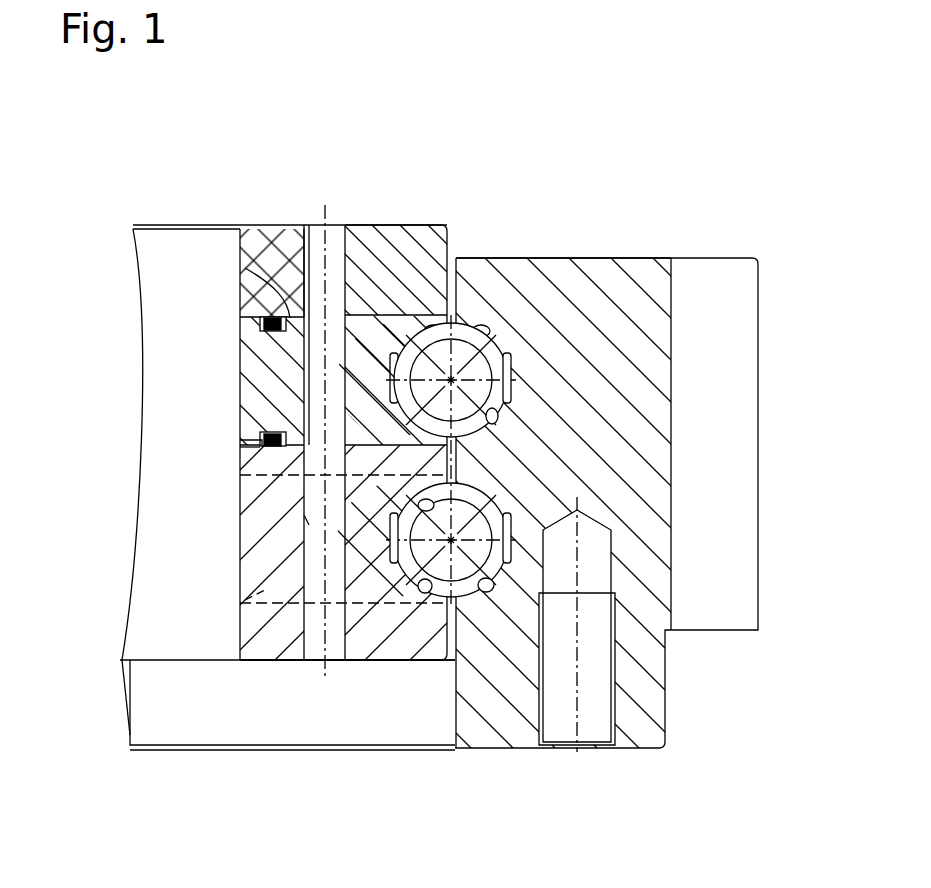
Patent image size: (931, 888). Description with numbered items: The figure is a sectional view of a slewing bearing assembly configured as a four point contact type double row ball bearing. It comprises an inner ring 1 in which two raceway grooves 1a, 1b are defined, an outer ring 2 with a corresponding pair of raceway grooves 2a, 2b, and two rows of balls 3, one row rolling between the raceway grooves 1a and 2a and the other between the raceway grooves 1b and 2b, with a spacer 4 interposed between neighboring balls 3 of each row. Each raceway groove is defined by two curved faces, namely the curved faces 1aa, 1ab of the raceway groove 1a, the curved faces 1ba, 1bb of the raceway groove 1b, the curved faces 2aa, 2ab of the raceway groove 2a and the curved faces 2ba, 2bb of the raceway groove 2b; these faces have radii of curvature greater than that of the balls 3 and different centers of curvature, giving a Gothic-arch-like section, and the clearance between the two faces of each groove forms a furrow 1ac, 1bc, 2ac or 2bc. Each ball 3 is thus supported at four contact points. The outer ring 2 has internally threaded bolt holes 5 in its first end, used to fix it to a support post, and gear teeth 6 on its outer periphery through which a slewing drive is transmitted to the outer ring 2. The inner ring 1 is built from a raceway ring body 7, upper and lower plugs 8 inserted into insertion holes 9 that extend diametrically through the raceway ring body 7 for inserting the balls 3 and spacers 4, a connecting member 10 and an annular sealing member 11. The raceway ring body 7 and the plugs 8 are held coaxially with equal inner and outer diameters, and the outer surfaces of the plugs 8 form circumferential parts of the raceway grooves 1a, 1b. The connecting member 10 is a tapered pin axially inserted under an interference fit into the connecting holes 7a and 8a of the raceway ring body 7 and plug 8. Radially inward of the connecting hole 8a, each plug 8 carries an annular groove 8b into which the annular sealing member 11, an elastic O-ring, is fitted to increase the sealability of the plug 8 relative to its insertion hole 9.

The inner ring 1 is at (250, 195).
The raceway groove 1a is at (250, 797).
The curved face 1aa is at (440, 605).
The curved face 1ab is at (318, 640).
The furrow 1ac is at (265, 655).
The raceway groove 1b is at (458, 148).
The curved face 1ba is at (397, 335).
The curved face 1bb is at (442, 320).
The furrow 1bc is at (258, 443).
The outer ring 2 is at (650, 653).
The raceway groove 2a is at (665, 810).
The curved face 2aa is at (515, 600).
The curved face 2ab is at (543, 620).
The furrow 2ac is at (510, 507).
The raceway groove 2b is at (650, 176).
The curved face 2ba is at (535, 335).
The curved face 2bb is at (478, 318).
The furrow 2bc is at (530, 362).
The ball 3 is at (515, 398).
The spacer 4 is at (459, 360).
The internally threaded bolt hole 5 is at (600, 672).
The gear teeth 6 is at (725, 569).
The raceway ring body 7 is at (253, 571).
The connecting hole 7a is at (312, 520).
The plug 8 is at (245, 378).
The connecting hole 8a is at (390, 393).
The annular groove 8b is at (240, 450).
The insertion hole 9 is at (245, 268).
The connecting member 10 is at (313, 237).
The annular sealing member 11 is at (262, 325).